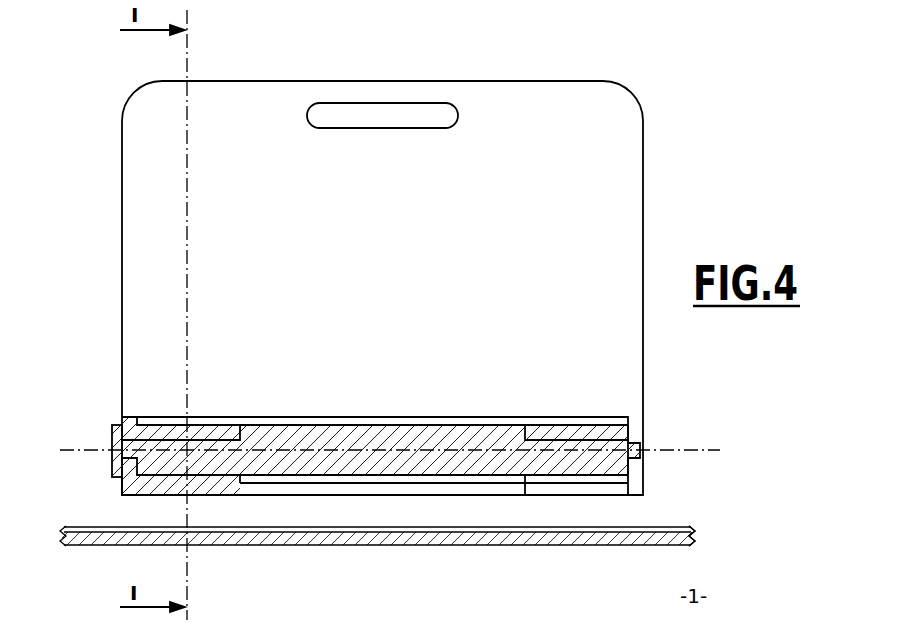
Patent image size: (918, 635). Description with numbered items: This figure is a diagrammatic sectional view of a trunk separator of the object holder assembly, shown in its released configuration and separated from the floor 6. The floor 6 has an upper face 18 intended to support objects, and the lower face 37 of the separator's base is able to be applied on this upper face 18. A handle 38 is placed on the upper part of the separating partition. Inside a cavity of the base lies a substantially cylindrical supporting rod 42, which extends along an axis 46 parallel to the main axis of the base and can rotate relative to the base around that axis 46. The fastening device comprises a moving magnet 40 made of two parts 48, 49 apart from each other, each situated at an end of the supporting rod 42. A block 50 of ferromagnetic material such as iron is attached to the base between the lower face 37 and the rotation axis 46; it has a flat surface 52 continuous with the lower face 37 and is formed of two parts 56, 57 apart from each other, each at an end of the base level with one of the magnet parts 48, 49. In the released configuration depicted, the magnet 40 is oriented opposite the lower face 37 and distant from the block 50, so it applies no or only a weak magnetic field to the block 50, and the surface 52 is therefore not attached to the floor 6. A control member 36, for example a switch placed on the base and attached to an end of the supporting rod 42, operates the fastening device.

The floor 6 is at (703, 533).
The upper face 18 is at (650, 527).
The control member 36 is at (112, 455).
The lower face 37 is at (461, 495).
The handle 38 is at (404, 103).
The moving magnet 40 is at (162, 407).
The supporting rod 42 is at (322, 467).
The axis 46 is at (698, 450).
The first part of the magnet 48 is at (148, 428).
The second part of the magnet 49 is at (597, 435).
The block 50 is at (207, 494).
The flat surface 52 is at (557, 495).
The first part of the block 56 is at (152, 488).
The second part of the block 57 is at (592, 485).